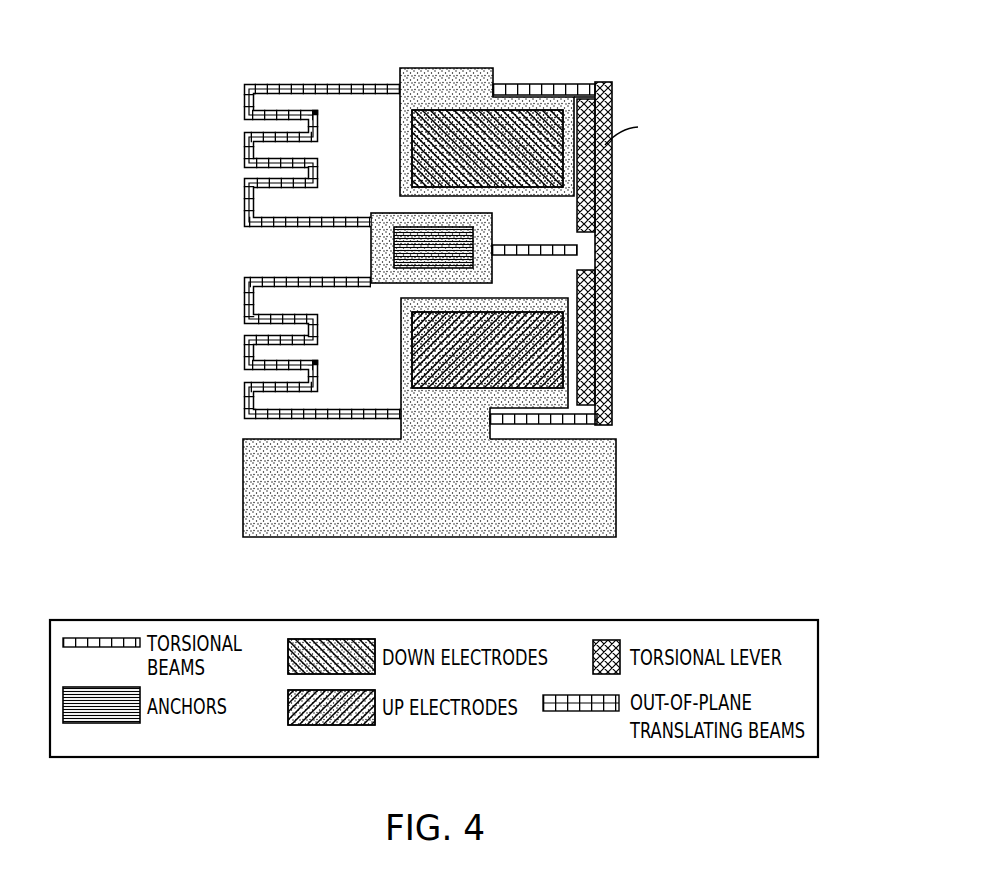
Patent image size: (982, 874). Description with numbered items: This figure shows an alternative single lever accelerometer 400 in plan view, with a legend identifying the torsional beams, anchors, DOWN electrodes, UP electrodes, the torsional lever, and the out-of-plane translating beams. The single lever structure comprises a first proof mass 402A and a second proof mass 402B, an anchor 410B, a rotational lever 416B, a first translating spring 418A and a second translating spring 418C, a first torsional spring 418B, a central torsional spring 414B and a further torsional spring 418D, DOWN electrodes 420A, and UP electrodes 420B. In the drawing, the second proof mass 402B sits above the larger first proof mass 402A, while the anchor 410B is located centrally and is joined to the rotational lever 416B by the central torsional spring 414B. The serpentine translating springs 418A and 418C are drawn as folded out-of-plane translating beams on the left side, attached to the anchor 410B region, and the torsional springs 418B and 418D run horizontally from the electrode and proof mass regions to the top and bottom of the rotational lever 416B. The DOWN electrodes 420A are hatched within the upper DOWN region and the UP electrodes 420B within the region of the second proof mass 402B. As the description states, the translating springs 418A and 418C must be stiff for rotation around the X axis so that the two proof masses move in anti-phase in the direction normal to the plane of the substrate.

The single lever accelerometer 400 is at (615, 70).
The translating spring B11 418A is at (298, 88).
The torsional spring B21 418B is at (560, 90).
The translating spring B12 418C is at (252, 350).
The torsional spring B22 418D is at (588, 422).
The DOWN electrode C1 420A is at (415, 152).
The UP electrode C2 420B is at (415, 352).
The proof mass 402A is at (465, 538).
The proof mass 402B is at (403, 403).
The anchor 410B is at (482, 265).
The torsional spring B 414B is at (543, 244).
The rotational lever 416B is at (612, 320).